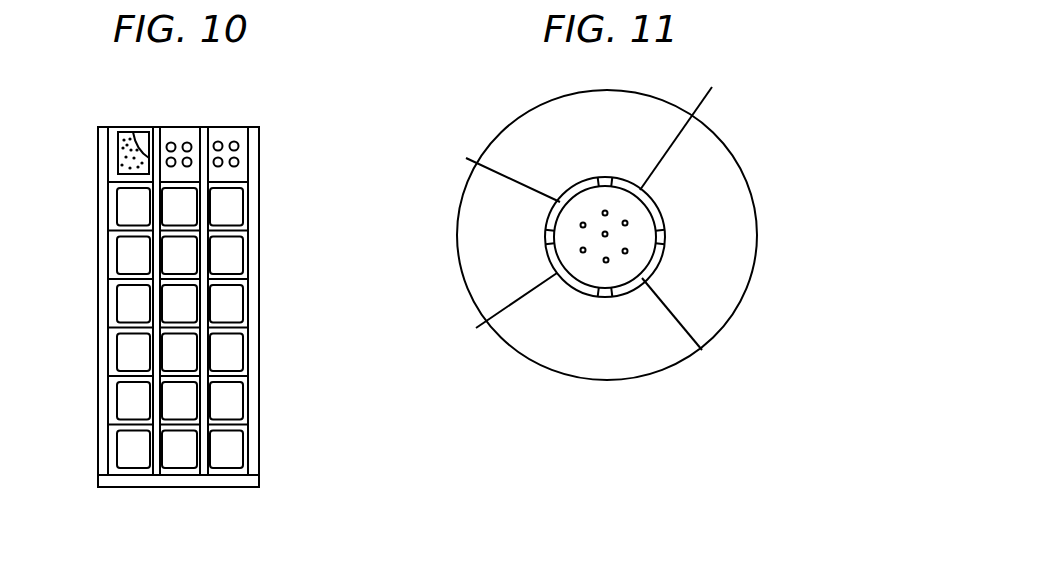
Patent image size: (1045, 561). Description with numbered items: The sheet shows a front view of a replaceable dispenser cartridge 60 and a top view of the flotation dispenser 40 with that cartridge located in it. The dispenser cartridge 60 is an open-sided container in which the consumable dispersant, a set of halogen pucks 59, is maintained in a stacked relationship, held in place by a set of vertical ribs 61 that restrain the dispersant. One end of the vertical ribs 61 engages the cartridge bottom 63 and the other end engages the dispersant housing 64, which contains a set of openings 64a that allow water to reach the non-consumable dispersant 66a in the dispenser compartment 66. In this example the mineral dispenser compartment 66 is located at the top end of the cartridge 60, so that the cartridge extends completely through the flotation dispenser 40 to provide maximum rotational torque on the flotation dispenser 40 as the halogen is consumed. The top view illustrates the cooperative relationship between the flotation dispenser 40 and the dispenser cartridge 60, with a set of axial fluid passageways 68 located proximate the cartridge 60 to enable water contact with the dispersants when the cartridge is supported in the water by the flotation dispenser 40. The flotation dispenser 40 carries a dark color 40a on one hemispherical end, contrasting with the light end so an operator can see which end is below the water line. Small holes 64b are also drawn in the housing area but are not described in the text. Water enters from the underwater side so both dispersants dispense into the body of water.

In FIG. 11, the flotation dispenser 40 is at (745, 168).
In FIG. 11, the dark color 40a is at (661, 215).
In FIG. 10, the halogen pucks 59 is at (227, 397).
In FIG. 10, the dispenser cartridge 60 is at (288, 129).
In FIG. 11, the dispenser cartridge 60 is at (615, 232).
In FIG. 10, the vertical ribs 61 is at (152, 260).
In FIG. 11, the vertical ribs 61 is at (603, 178).
In FIG. 10, the cartridge bottom 63 is at (203, 488).
In FIG. 10, the dispersant housing 64 is at (137, 128).
In FIG. 11, the dispersant housing 64 is at (642, 250).
In FIG. 10, the openings 64a is at (189, 142).
In FIG. 11, the small holes 64b is at (583, 253).
In FIG. 10, the dispenser compartment 66 is at (108, 170).
In FIG. 10, the non-consumable dispersant 66a is at (120, 146).
In FIG. 11, the axial fluid passageways 68 is at (580, 225).